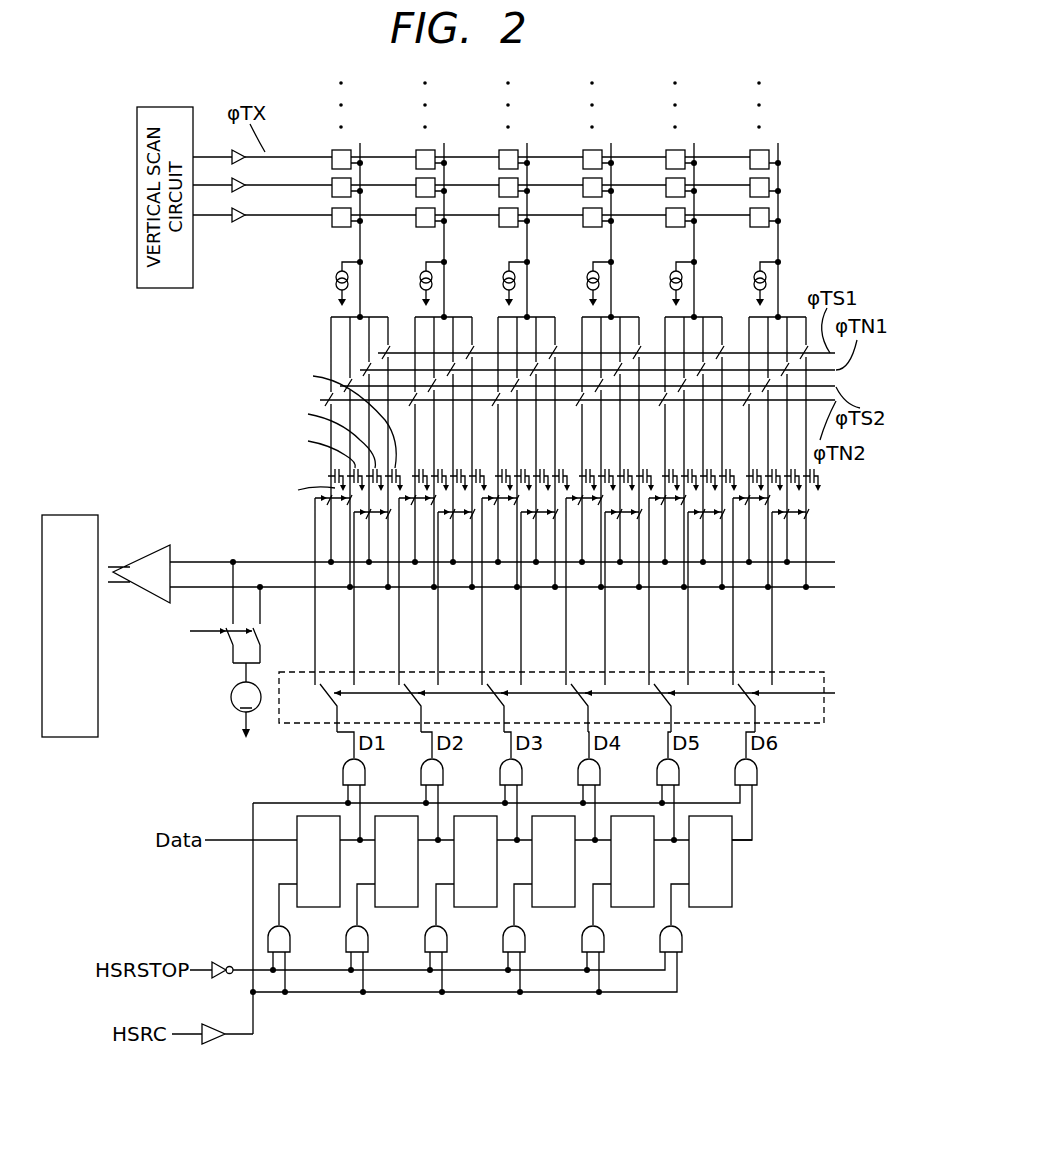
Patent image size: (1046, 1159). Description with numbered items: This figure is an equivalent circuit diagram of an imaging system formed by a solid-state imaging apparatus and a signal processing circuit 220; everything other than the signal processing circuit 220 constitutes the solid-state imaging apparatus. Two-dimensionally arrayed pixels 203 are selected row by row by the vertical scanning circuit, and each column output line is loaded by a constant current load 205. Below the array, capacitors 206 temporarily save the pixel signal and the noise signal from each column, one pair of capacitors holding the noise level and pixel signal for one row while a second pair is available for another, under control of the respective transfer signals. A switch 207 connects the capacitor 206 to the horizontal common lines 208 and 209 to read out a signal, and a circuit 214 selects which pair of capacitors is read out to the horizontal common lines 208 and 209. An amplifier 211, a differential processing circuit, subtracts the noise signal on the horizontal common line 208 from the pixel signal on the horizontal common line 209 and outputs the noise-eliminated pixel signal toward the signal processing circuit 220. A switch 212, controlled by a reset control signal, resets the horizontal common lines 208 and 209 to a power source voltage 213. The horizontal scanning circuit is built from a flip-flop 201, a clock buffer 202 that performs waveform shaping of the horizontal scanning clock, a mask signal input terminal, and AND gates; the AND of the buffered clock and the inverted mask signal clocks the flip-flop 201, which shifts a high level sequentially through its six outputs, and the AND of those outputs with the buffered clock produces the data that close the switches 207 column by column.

The flip-flop 201 is at (322, 908).
The clock buffer 202 is at (222, 1045).
The pixel 203 is at (312, 152).
The constant current load 205 is at (336, 281).
The capacitor 206 is at (326, 475).
The switch 207 is at (325, 506).
The horizontal common line 208 is at (283, 590).
The horizontal common line 209 is at (204, 561).
The amplifier 211 is at (152, 553).
The switch 212 is at (259, 636).
The power source voltage 213 is at (231, 705).
The circuit 214 is at (806, 724).
The signal processing circuit 220 is at (78, 515).